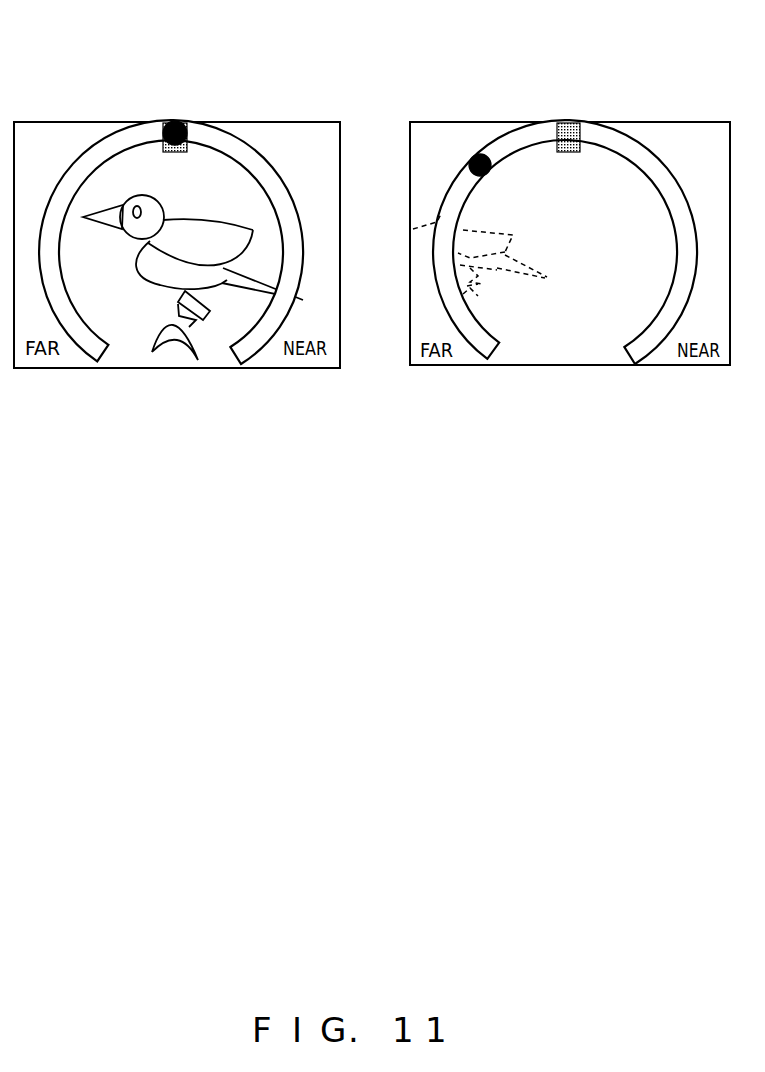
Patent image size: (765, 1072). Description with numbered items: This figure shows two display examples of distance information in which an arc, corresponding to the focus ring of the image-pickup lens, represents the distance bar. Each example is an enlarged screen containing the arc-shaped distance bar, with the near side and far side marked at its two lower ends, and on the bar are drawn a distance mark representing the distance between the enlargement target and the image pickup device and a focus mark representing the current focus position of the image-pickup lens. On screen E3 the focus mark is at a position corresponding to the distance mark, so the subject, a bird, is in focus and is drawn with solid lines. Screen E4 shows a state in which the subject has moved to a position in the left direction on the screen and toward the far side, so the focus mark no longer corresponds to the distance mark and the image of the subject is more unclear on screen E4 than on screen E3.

The screen E3 is at (273, 122).
The screen E4 is at (670, 122).